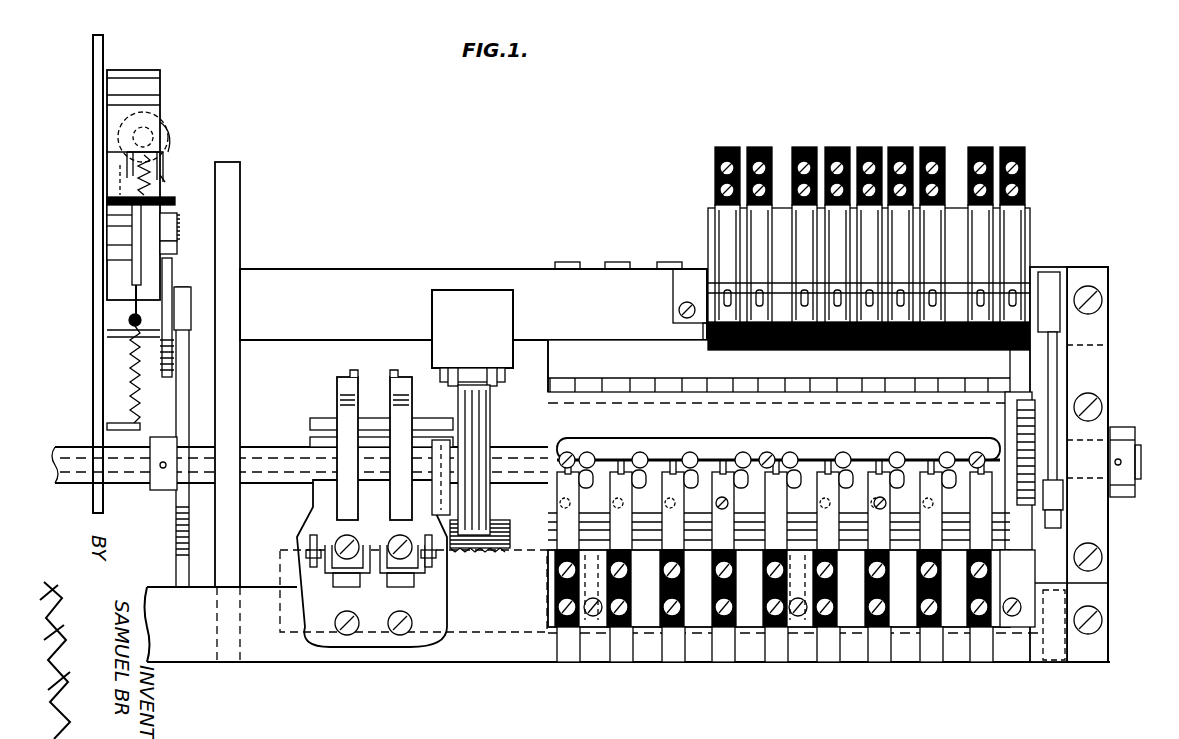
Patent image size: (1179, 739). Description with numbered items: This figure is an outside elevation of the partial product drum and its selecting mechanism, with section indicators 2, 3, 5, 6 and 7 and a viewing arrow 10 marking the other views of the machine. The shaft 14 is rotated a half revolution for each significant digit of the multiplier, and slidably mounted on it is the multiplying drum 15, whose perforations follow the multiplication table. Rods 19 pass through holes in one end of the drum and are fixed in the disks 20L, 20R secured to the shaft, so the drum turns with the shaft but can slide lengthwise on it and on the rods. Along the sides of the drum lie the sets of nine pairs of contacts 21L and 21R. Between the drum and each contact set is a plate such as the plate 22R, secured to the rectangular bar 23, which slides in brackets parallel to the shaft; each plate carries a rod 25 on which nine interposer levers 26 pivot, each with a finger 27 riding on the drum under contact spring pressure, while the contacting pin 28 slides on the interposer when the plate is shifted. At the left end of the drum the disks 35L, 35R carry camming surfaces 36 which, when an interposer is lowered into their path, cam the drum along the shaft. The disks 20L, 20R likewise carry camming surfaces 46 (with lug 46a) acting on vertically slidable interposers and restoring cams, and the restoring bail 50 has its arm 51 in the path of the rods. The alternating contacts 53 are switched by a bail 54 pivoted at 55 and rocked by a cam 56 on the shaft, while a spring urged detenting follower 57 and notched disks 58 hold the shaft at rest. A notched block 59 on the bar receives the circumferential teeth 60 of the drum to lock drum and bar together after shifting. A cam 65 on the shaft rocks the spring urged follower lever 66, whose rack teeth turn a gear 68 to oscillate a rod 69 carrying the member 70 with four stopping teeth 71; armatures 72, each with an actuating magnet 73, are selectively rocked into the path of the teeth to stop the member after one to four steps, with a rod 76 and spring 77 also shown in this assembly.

The viewing direction arrow 10 is at (194, 42).
The section line 2- 2 is at (318, 244).
The section line 3- 3 is at (465, 244).
The section line 5- 5 is at (589, 72).
The section line 6- 6 is at (1022, 107).
The section line 7- 7 is at (310, 303).
The shaft 14 is at (252, 444).
The multiplying drum 15 is at (778, 435).
The rods 19 is at (430, 453).
The left disk 20L is at (340, 420).
The right disk 20R is at (403, 413).
The left set of contacts 21L is at (667, 378).
The right set of contacts 21R is at (818, 660).
The right plate 22R is at (817, 447).
The rectangular bar 23 is at (520, 574).
The rod 25 is at (783, 454).
The interposer levers 26 is at (685, 466).
The finger 27 is at (647, 513).
The contacting pin 28 is at (730, 500).
The right disk 35R is at (458, 428).
The left disk 35L is at (490, 446).
The camming surfaces 36 is at (448, 369).
The camming surfaces 46 is at (337, 383).
The post lug 46a is at (388, 381).
The restoring bail 50 is at (314, 535).
The connected arm 51 is at (338, 520).
The alternating contacts 53 is at (790, 246).
The bail 54 is at (1040, 333).
The pivot 55 is at (1036, 292).
The cam 56 is at (1010, 450).
The detenting follower 57 is at (1063, 495).
The notched disks 58 is at (1060, 528).
The notched block 59 is at (486, 560).
The circumferential teeth 60 is at (490, 465).
The cam 65 is at (176, 540).
The follower lever 66 is at (173, 275).
The gear 68 is at (178, 222).
The rod 69 is at (178, 246).
The member 70 is at (140, 262).
The stopping teeth 71 is at (140, 222).
The armatures 72 is at (155, 90).
The actuating magnet 73 is at (168, 182).
The rod 76 is at (136, 290).
The spring 77 is at (129, 391).